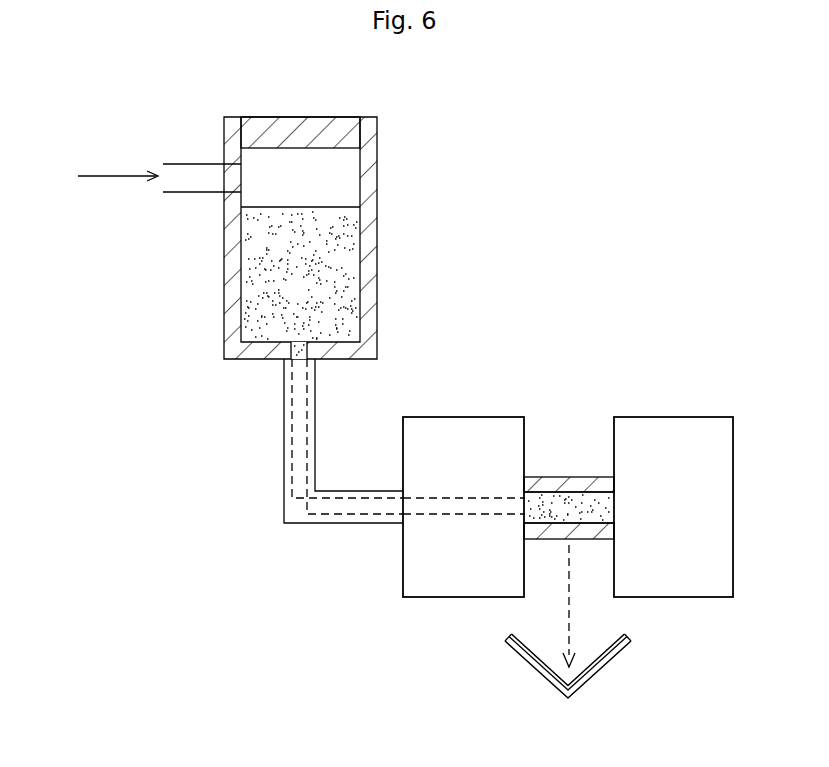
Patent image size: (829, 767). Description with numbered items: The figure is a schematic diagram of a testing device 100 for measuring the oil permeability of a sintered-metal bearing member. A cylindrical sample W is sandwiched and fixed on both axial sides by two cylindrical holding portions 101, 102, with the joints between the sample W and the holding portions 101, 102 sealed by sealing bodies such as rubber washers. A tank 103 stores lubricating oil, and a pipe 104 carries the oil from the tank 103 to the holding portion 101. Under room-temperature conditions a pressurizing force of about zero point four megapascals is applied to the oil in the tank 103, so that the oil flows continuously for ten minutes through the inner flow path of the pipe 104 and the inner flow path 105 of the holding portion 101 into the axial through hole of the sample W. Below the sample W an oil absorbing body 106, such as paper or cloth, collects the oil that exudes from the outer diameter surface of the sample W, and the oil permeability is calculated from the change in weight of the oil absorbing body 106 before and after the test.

The testing device 100 is at (529, 228).
The holding portion 101 is at (462, 432).
The holding portion 102 is at (672, 432).
The tank 103 is at (377, 177).
The pipe 104 is at (284, 467).
The inner flow path 105 is at (466, 512).
The oil absorbing body 106 is at (605, 670).
The sample W is at (561, 474).